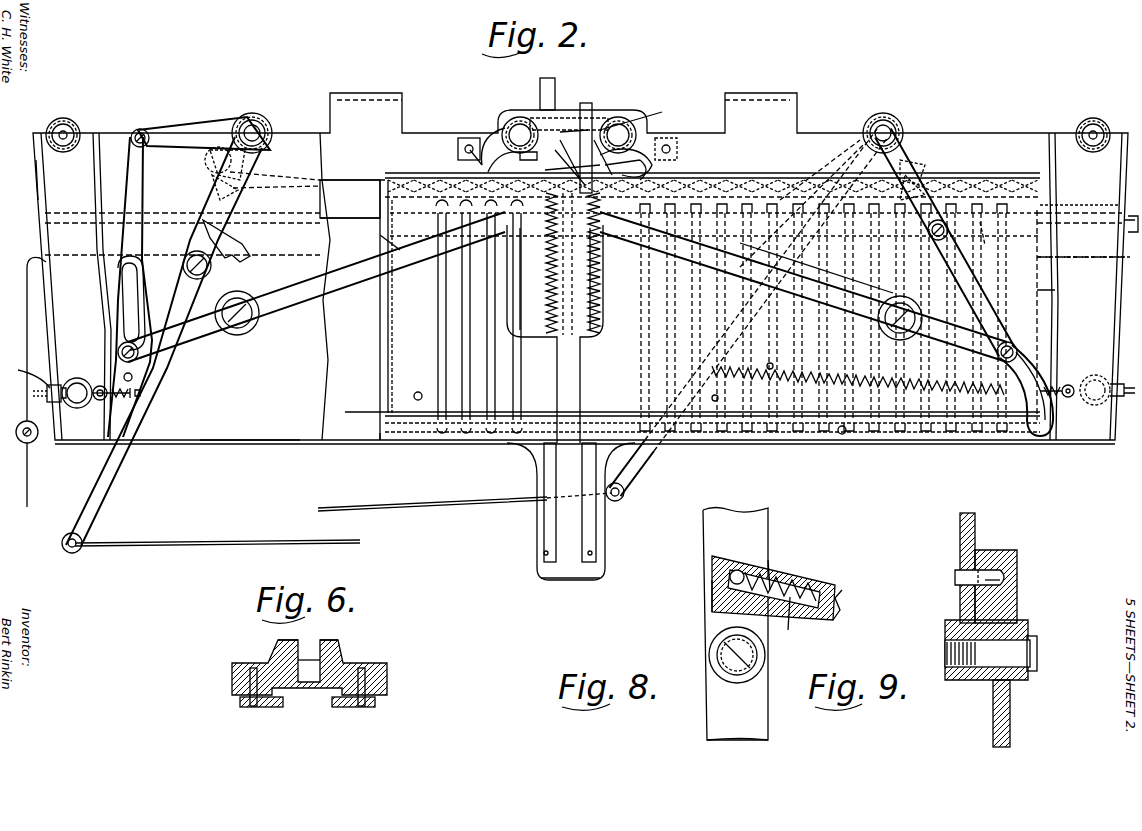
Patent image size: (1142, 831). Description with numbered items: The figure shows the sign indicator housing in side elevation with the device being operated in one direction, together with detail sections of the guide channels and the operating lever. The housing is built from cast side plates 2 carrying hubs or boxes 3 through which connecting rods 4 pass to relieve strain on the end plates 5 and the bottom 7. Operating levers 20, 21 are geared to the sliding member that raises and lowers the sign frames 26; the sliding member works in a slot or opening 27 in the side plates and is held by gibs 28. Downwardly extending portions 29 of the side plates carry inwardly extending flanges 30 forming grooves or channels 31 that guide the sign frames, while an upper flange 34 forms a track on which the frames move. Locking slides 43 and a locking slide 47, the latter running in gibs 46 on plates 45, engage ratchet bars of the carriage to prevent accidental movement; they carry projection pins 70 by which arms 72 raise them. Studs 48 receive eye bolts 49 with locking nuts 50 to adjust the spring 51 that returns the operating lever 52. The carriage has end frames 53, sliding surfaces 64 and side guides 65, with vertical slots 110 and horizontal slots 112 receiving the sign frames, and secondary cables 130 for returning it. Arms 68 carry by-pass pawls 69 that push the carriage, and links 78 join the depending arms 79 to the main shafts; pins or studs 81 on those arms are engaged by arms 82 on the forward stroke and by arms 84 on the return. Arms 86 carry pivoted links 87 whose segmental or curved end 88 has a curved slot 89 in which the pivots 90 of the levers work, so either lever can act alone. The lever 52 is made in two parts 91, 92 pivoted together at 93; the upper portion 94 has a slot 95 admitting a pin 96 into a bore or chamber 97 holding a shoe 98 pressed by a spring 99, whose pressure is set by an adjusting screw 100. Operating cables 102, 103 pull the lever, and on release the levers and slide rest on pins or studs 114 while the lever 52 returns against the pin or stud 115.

In FIG. 2, the side plates 2 is at (585, 268).
In FIG. 2, the hubs or boxes 3 is at (1094, 120).
In FIG. 2, the connecting rods 4 is at (1090, 140).
In FIG. 2, the end plates 5 is at (38, 231).
In FIG. 2, the bottom 7 is at (255, 443).
In FIG. 2, the operating lever 20 is at (305, 300).
In FIG. 2, the operating lever 21 is at (985, 335).
In FIG. 2, the sign frames 26 is at (462, 288).
In FIG. 2, the slot or opening 27 is at (545, 415).
In FIG. 2, the gibs 28 is at (598, 540).
In FIG. 6, the gibs 28 is at (345, 708).
In FIG. 2, the downwardly extending portions 29 is at (570, 578).
In FIG. 6, the downwardly extending portions 29 is at (390, 680).
In FIG. 6, the inwardly extending flanges 30 is at (340, 645).
In FIG. 2, the grooves or channels 31 is at (20, 440).
In FIG. 6, the grooves or channels 31 is at (308, 690).
In FIG. 2, the flange 34 is at (1082, 213).
In FIG. 2, the locking slides 43 is at (620, 105).
In FIG. 2, the plates 45 is at (650, 160).
In FIG. 2, the gibs 46 is at (590, 105).
In FIG. 2, the locking slide 47 is at (540, 88).
In FIG. 2, the studs 48 is at (77, 385).
In FIG. 2, the eye bolts 49 is at (98, 400).
In FIG. 2, the locking nuts 50 is at (25, 372).
In FIG. 2, the spring 51 is at (1000, 388).
In FIG. 2, the operating lever 52 is at (635, 470).
In FIG. 2, the end frames 53 is at (1058, 299).
In FIG. 2, the sliding surfaces 64 is at (360, 440).
In FIG. 2, the side guides 65 is at (345, 412).
In FIG. 2, the arms 68 is at (655, 155).
In FIG. 2, the by-pass pawls 69 is at (680, 160).
In FIG. 2, the projection pins 70 is at (640, 130).
In FIG. 2, the arms 72 is at (592, 130).
In FIG. 2, the links 78 is at (742, 180).
In FIG. 2, the depending arms 79 is at (925, 175).
In FIG. 2, the pins or studs 81 is at (920, 165).
In FIG. 2, the arms 82 is at (910, 160).
In FIG. 2, the arms 84 is at (870, 160).
In FIG. 2, the arms 86 is at (930, 190).
In FIG. 2, the pivoted links 87 is at (975, 290).
In FIG. 2, the segmental or curved end 88 is at (1045, 372).
In FIG. 2, the curved slot 89 is at (120, 302).
In FIG. 2, the pivots 90 is at (1008, 342).
In FIG. 8, the part 91 is at (725, 525).
In FIG. 9, the part 91 is at (960, 525).
In FIG. 8, the part 92 is at (722, 712).
In FIG. 9, the part 92 is at (995, 718).
In FIG. 8, the pivot 93 is at (720, 645).
In FIG. 9, the pivot 93 is at (1010, 654).
In FIG. 8, the upper portion 94 is at (800, 572).
In FIG. 9, the upper portion 94 is at (1020, 606).
In FIG. 8, the slot 95 is at (775, 565).
In FIG. 9, the slot 95 is at (960, 548).
In FIG. 8, the pin 96 is at (730, 578).
In FIG. 9, the pin 96 is at (1005, 570).
In FIG. 8, the bore or chamber 97 is at (788, 620).
In FIG. 9, the bore or chamber 97 is at (1010, 585).
In FIG. 8, the shoe 98 is at (712, 600).
In FIG. 8, the spring 99 is at (815, 578).
In FIG. 8, the adjusting screw 100 is at (870, 615).
In FIG. 2, the operating cable 102 is at (175, 548).
In FIG. 2, the operating cable 103 is at (442, 507).
In FIG. 2, the vertical slots 110 is at (1000, 430).
In FIG. 2, the horizontal slots 112 is at (380, 244).
In FIG. 2, the pins or studs 114 is at (838, 433).
In FIG. 2, the pin or stud 115 is at (1000, 380).
In FIG. 2, the secondary cables 130 is at (1092, 260).